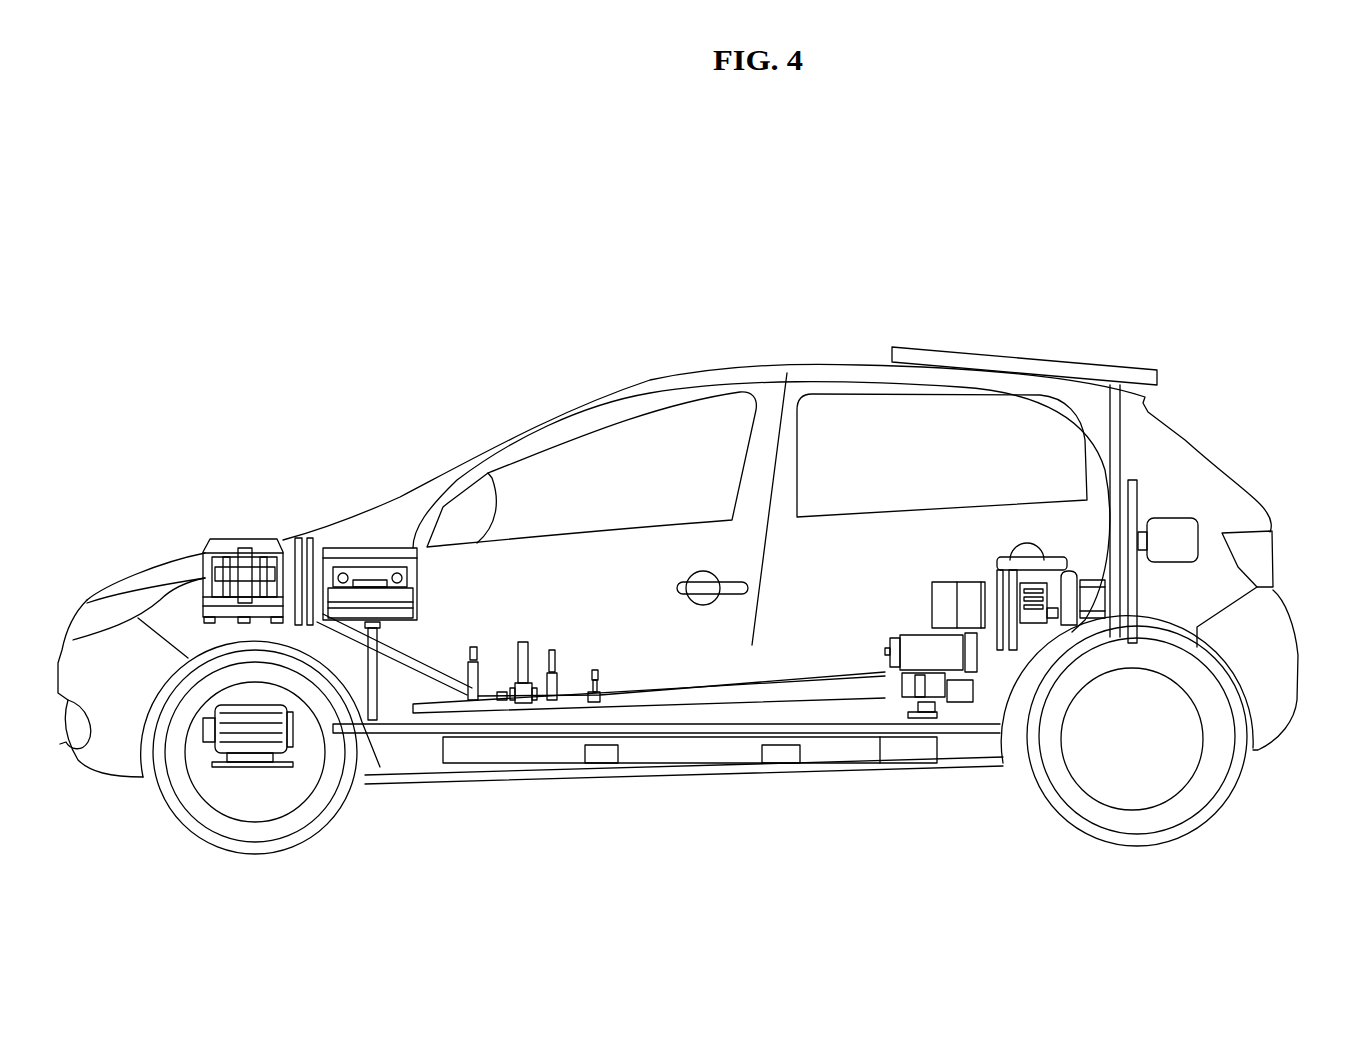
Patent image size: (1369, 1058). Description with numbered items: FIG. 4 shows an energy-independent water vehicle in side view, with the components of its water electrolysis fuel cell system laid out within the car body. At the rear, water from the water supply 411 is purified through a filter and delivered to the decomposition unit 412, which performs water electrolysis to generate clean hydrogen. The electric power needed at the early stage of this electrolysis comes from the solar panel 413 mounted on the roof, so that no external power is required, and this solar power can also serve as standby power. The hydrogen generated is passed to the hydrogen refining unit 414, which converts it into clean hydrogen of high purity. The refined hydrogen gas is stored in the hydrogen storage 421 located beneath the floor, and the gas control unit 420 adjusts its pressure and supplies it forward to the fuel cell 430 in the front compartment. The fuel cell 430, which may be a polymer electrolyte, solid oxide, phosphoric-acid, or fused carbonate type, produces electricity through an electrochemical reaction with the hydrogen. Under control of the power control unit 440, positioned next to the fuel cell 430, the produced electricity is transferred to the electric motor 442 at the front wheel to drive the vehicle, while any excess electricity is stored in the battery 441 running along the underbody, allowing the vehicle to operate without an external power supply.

The water supply 411 is at (1173, 578).
The decomposition unit 412 is at (1070, 558).
The solar panel 413 is at (1053, 310).
The hydrogen refining unit 414 is at (963, 566).
The gas control unit 420 is at (522, 622).
The hydrogen storage 421 is at (929, 735).
The fuel cell 430 is at (243, 526).
The power control unit 440 is at (370, 536).
The battery 441 is at (701, 773).
The electric motor 442 is at (253, 780).